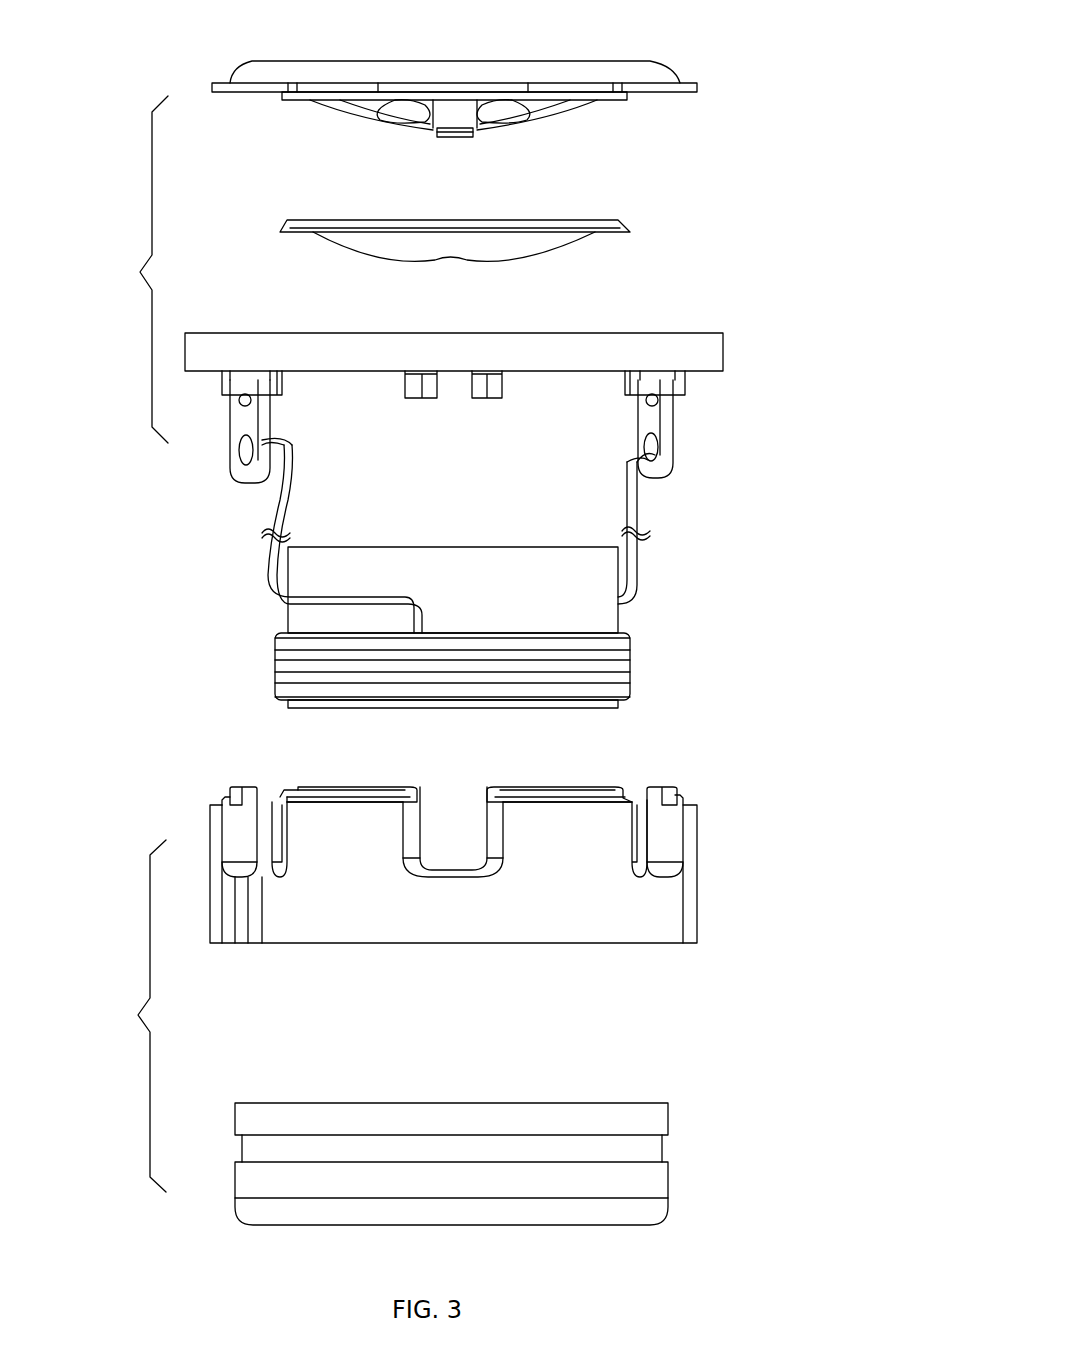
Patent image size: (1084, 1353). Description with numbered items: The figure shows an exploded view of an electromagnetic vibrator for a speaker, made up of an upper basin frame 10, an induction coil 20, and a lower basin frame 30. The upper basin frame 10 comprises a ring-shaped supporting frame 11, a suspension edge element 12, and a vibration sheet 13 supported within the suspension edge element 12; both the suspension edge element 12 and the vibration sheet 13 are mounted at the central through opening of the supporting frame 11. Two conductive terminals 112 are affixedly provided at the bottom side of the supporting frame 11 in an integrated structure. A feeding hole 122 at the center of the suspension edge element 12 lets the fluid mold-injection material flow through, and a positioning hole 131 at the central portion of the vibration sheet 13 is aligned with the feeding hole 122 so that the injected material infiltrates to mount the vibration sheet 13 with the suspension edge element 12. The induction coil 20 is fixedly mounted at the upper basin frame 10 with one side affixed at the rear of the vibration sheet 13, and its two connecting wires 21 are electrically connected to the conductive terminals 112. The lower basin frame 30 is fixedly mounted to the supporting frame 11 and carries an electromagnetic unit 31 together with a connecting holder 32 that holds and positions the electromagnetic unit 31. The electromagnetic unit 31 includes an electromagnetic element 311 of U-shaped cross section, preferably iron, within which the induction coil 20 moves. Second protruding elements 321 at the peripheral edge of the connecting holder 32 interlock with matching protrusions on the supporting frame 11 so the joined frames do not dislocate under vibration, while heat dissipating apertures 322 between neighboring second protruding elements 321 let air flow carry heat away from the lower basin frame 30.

The upper basin frame 10 is at (135, 269).
The supporting frame 11 is at (705, 348).
The conductive terminals 112 is at (265, 428).
The suspension edge element 12 is at (663, 70).
The feeding hole 122 is at (487, 130).
The vibration sheet 13 is at (622, 226).
The positioning hole 131 is at (452, 263).
The induction coil 20 is at (673, 558).
The connecting wires 21 is at (272, 560).
The lower basin frame 30 is at (134, 1016).
The electromagnetic unit 31 is at (705, 1138).
The electromagnetic element 311 is at (631, 1181).
The connecting holder 32 is at (682, 899).
The second protruding elements 321 is at (340, 790).
The heat dissipating apertures 322 is at (238, 865).